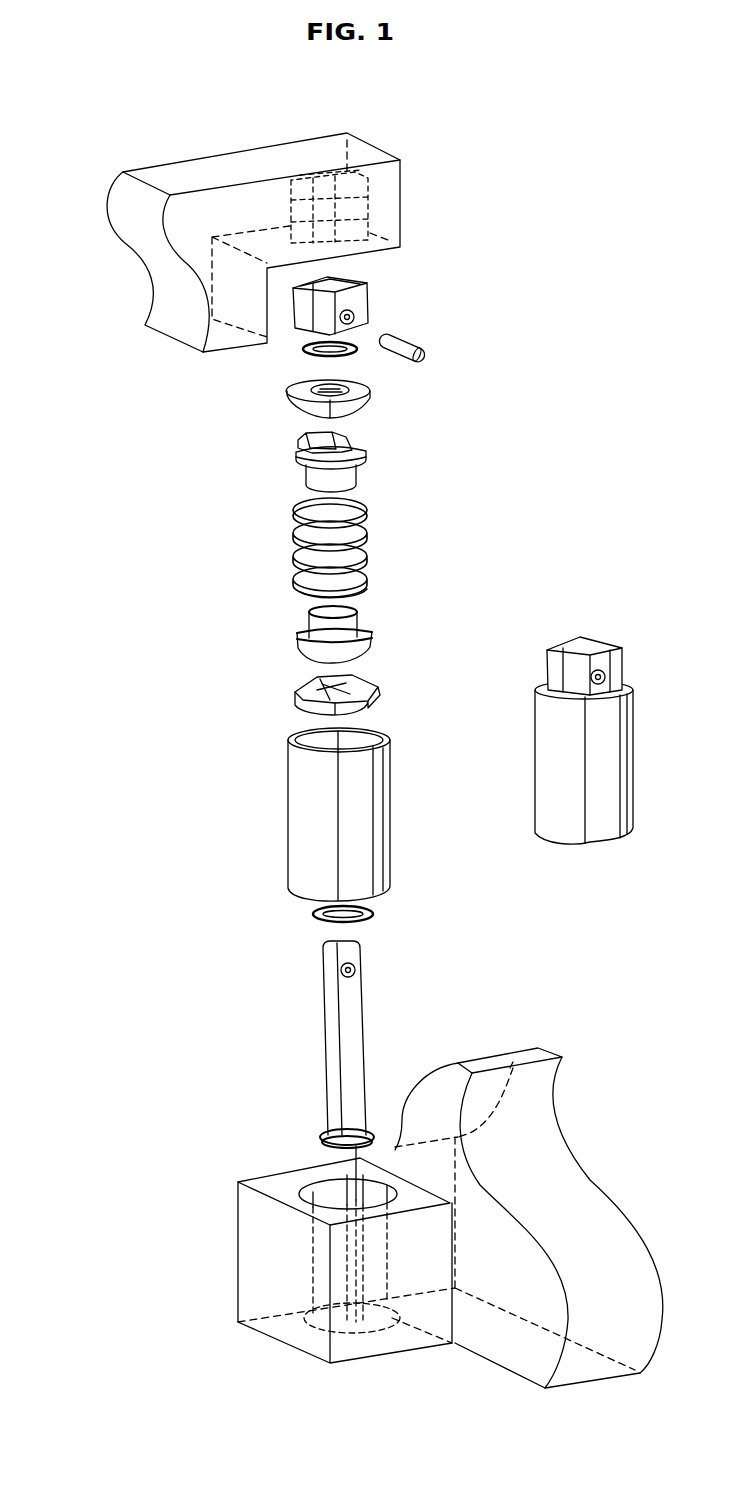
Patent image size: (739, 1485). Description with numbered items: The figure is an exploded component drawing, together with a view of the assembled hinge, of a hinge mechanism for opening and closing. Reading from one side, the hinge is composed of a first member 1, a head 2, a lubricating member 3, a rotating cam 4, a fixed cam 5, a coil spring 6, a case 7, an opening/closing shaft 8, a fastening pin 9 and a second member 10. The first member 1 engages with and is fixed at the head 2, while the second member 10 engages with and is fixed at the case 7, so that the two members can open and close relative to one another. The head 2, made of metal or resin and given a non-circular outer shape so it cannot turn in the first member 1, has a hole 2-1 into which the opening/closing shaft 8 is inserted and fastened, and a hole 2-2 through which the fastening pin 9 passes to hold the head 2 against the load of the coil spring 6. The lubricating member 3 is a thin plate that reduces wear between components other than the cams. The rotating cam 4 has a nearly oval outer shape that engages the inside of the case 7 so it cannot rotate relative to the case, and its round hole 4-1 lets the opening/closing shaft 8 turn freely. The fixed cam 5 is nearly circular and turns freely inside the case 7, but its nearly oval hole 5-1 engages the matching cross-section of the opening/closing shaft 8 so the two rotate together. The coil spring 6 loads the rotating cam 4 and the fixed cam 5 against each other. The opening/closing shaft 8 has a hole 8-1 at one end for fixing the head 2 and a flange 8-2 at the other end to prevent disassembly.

The first member 1 is at (197, 228).
The head 2 is at (410, 261).
The hole 2-1 is at (347, 278).
The hole 2-2 is at (372, 316).
The lubricating member 3 is at (354, 351).
The rotating cam 4 is at (345, 547).
The hole 4-1 is at (291, 402).
The fixed cam 5 is at (325, 547).
The hole 5-1 is at (300, 462).
The coil spring 6 is at (363, 553).
The case 7 is at (307, 822).
The opening/closing shaft 8 is at (330, 1044).
The hole 8-1 is at (360, 971).
The flange 8-2 is at (320, 1135).
The fastening pin 9 is at (433, 352).
The second member 10 is at (257, 1245).